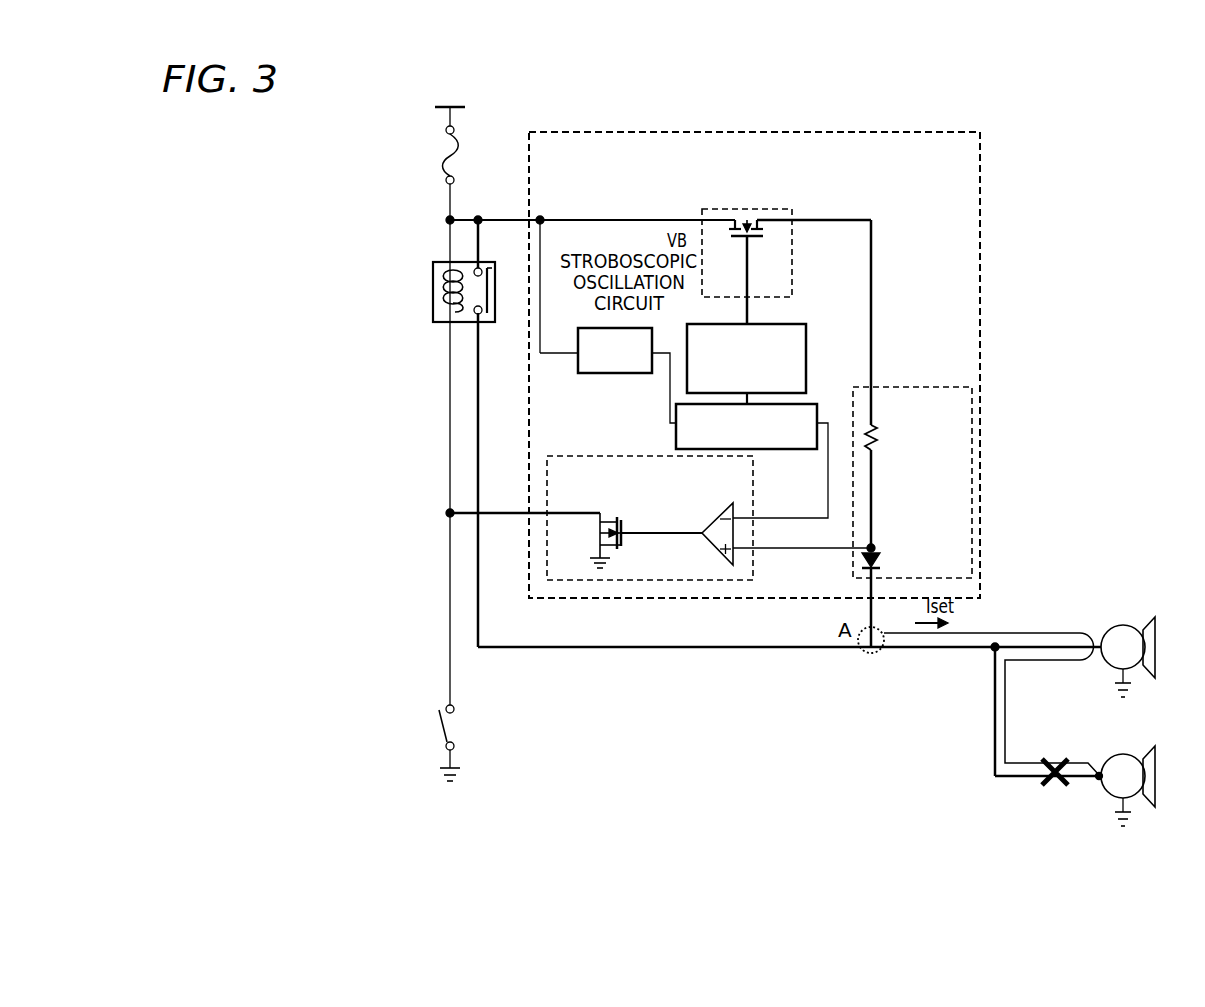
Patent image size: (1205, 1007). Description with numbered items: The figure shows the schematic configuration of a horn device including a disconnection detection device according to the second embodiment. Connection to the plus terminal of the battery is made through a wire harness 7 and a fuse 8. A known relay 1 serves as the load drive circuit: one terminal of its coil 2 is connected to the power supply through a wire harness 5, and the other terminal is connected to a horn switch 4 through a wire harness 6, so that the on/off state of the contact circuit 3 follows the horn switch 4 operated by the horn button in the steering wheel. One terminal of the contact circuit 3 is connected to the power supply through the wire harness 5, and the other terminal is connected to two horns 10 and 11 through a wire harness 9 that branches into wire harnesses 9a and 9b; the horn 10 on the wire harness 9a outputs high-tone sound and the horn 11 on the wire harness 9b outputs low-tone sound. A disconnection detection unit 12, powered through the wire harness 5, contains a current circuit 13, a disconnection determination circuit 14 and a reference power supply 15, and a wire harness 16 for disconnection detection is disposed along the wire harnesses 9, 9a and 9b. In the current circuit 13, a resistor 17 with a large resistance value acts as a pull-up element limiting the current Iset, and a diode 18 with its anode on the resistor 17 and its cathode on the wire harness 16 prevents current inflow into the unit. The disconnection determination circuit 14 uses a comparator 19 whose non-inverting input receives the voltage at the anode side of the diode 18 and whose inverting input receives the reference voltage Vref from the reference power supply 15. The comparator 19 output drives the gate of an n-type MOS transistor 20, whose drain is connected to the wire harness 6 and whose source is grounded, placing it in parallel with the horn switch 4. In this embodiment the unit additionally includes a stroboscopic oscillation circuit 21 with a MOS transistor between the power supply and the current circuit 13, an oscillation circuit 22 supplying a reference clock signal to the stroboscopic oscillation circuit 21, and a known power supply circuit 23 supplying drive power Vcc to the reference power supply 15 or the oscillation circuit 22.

The relay 1 is at (433, 313).
The coil 2 is at (445, 312).
The contact circuit 3 is at (486, 322).
The horn switch 4 is at (438, 735).
The wire harness 5 is at (448, 237).
The wire harness 6 is at (448, 565).
The wire harness 7 is at (447, 118).
The fuse 8 is at (462, 155).
The wire harness 9 is at (620, 648).
The wire harness 9a is at (1042, 633).
The wire harness 9b is at (1010, 778).
The horn 10 is at (1105, 667).
The horn 11 is at (1110, 795).
The disconnection detection unit 12 is at (843, 131).
The current circuit 13 is at (887, 407).
The disconnection determination circuit 14 is at (703, 582).
The reference power supply 15 is at (792, 451).
The wire harness for disconnection detection 16 is at (993, 633).
The resistor 17 is at (882, 437).
The diode 18 is at (880, 562).
The comparator 19 is at (736, 556).
The n-type MOS transistor 20 is at (624, 545).
The stroboscopic oscillation circuit 21 is at (752, 211).
The oscillation circuit 22 is at (803, 323).
The power supply circuit 23 is at (619, 373).